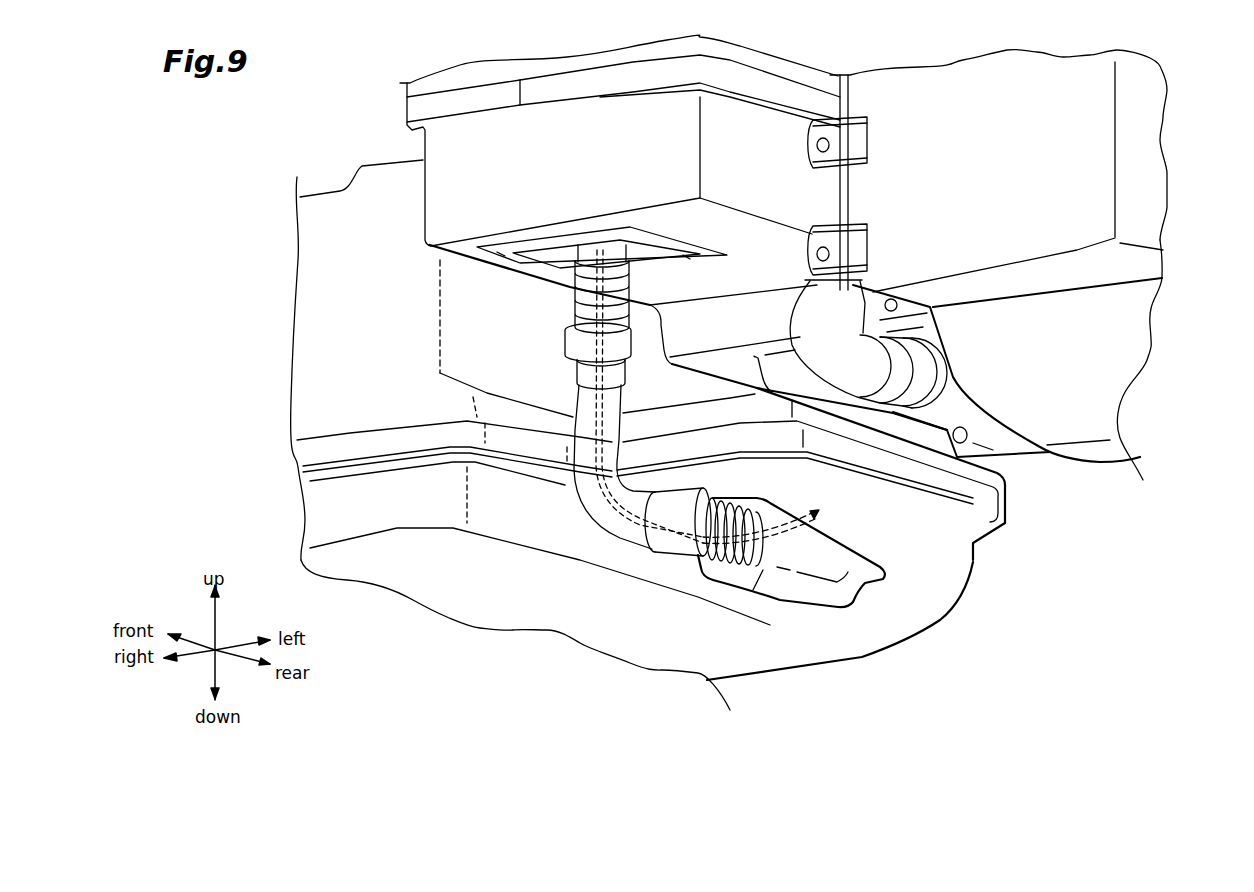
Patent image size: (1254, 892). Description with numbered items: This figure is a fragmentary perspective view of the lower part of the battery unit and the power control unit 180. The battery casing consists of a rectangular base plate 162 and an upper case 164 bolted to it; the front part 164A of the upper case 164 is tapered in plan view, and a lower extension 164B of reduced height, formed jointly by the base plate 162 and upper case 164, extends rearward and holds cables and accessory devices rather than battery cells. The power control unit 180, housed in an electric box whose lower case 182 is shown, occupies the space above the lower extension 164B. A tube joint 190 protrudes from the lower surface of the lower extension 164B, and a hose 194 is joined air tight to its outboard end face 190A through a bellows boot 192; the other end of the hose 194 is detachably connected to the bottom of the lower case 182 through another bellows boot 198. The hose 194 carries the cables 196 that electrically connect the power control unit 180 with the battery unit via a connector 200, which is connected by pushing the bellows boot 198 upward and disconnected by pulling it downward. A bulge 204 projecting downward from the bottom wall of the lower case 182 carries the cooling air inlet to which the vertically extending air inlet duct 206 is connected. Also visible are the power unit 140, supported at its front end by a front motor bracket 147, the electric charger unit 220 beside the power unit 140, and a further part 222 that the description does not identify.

The power unit 140 is at (1088, 389).
The front motor bracket 147 is at (913, 307).
The base plate 162 is at (397, 530).
The upper case 164 is at (368, 190).
The front part of the upper case 164A is at (303, 290).
The lower extension 164B is at (987, 523).
The power control unit 180 is at (768, 53).
The lower case 182 is at (634, 111).
The tube joint 190 is at (865, 582).
The end face 190A is at (750, 572).
The bellows boot 192 is at (717, 565).
The hose 194 is at (584, 500).
The cables 196 is at (617, 363).
The bellows boot 198 is at (575, 291).
The connector 200 is at (615, 299).
The bulge 204 is at (947, 402).
The air inlet duct 206 is at (858, 318).
The electric charger unit 220 is at (1142, 146).
The clamp bracket 222 is at (830, 238).